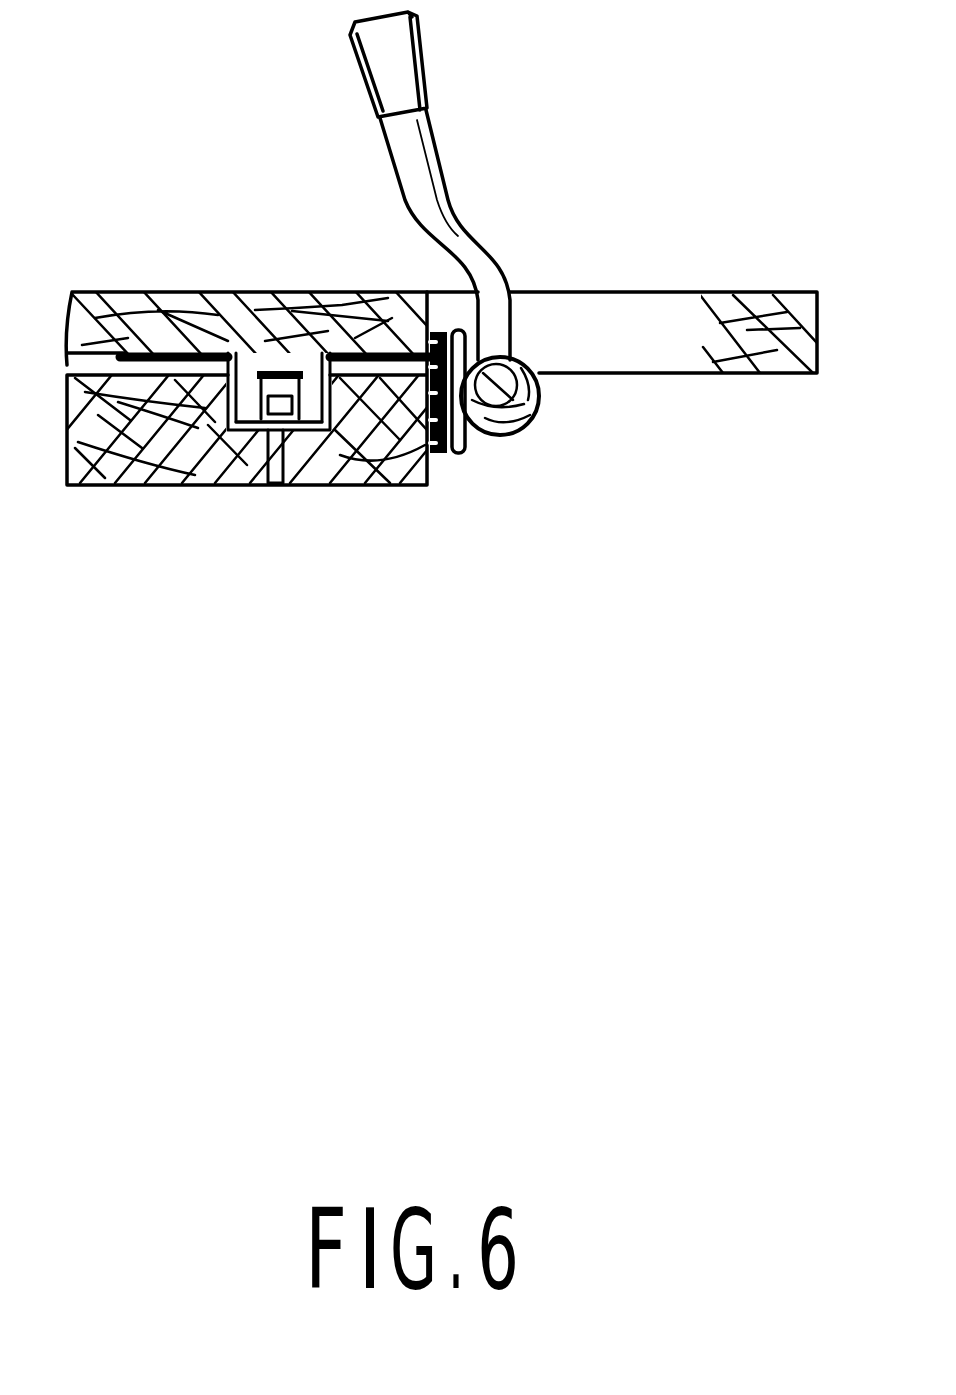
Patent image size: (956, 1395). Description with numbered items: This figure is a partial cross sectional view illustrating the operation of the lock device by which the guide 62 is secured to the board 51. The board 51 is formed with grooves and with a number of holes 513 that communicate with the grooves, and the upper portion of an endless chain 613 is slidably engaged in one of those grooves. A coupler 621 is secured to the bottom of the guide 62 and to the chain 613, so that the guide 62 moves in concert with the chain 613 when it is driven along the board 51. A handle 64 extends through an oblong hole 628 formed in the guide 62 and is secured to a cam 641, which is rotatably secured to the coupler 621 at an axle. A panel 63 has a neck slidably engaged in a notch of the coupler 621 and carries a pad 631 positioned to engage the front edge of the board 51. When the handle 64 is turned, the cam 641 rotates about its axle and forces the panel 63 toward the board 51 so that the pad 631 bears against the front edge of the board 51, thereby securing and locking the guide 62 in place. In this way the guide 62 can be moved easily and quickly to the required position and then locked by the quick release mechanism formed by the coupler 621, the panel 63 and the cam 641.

The board 51 is at (132, 483).
The holes 513 is at (282, 483).
The guide 62 is at (751, 303).
The coupler 621 is at (192, 367).
The oblong hole 628 is at (588, 325).
The endless chain 613 is at (263, 430).
The panel 63 is at (464, 453).
The pad 631 is at (440, 453).
The handle 64 is at (435, 183).
The cam 641 is at (527, 432).